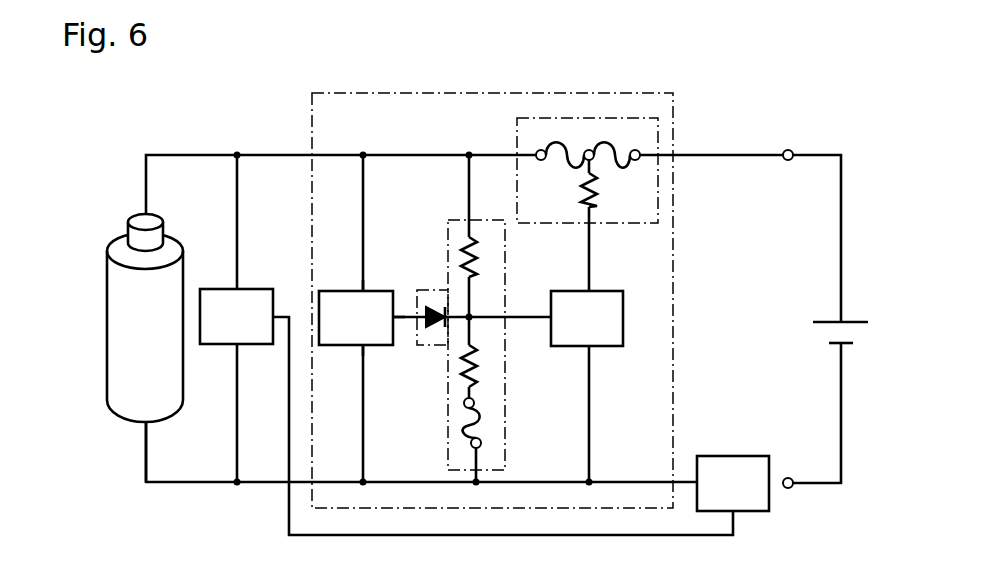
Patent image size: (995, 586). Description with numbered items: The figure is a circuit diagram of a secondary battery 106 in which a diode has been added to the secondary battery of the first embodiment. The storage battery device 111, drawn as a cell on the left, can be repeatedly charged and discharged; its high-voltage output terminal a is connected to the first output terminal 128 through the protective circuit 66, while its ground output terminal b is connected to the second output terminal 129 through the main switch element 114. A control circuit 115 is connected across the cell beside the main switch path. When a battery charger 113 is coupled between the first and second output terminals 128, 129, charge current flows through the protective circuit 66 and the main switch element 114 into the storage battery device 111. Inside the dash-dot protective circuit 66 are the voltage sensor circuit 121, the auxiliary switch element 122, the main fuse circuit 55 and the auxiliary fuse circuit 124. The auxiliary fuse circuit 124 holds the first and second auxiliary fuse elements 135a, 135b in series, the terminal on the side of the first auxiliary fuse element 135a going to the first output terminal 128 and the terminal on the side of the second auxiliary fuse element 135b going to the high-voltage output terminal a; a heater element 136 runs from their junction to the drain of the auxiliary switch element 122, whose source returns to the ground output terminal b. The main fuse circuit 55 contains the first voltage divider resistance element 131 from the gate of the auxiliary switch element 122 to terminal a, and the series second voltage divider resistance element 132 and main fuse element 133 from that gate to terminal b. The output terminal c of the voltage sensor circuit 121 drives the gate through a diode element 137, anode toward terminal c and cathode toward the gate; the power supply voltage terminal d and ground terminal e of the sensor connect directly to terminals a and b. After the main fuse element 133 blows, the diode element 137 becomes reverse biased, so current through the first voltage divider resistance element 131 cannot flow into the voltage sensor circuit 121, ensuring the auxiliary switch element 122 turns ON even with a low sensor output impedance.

The secondary battery 106 is at (228, 104).
The storage battery device 111 is at (108, 232).
The high-voltage output terminal a is at (150, 220).
The ground output terminal b is at (147, 426).
The control circuit 115 is at (214, 345).
The protection circuit board 66 is at (430, 92).
The voltage sensor circuit 121 is at (342, 290).
The power supply voltage terminal d is at (366, 290).
The ground terminal e is at (355, 346).
The output terminal c is at (394, 320).
The main fuse circuit 55 is at (505, 345).
The first voltage divider resistance element 131 is at (457, 243).
The diode element 137 is at (437, 332).
The second voltage divider resistance element 132 is at (482, 370).
The main fuse element 133 is at (480, 428).
The auxiliary fuse circuit 124 is at (660, 128).
The first auxiliary fuse element 135a is at (616, 143).
The second auxiliary fuse element 135b is at (553, 133).
The heater element 136 is at (603, 193).
The auxiliary switch element 122 is at (623, 316).
The first output terminal 128 is at (788, 150).
The battery charger 113 is at (826, 320).
The main switch element 114 is at (727, 456).
The second output terminal 129 is at (788, 489).